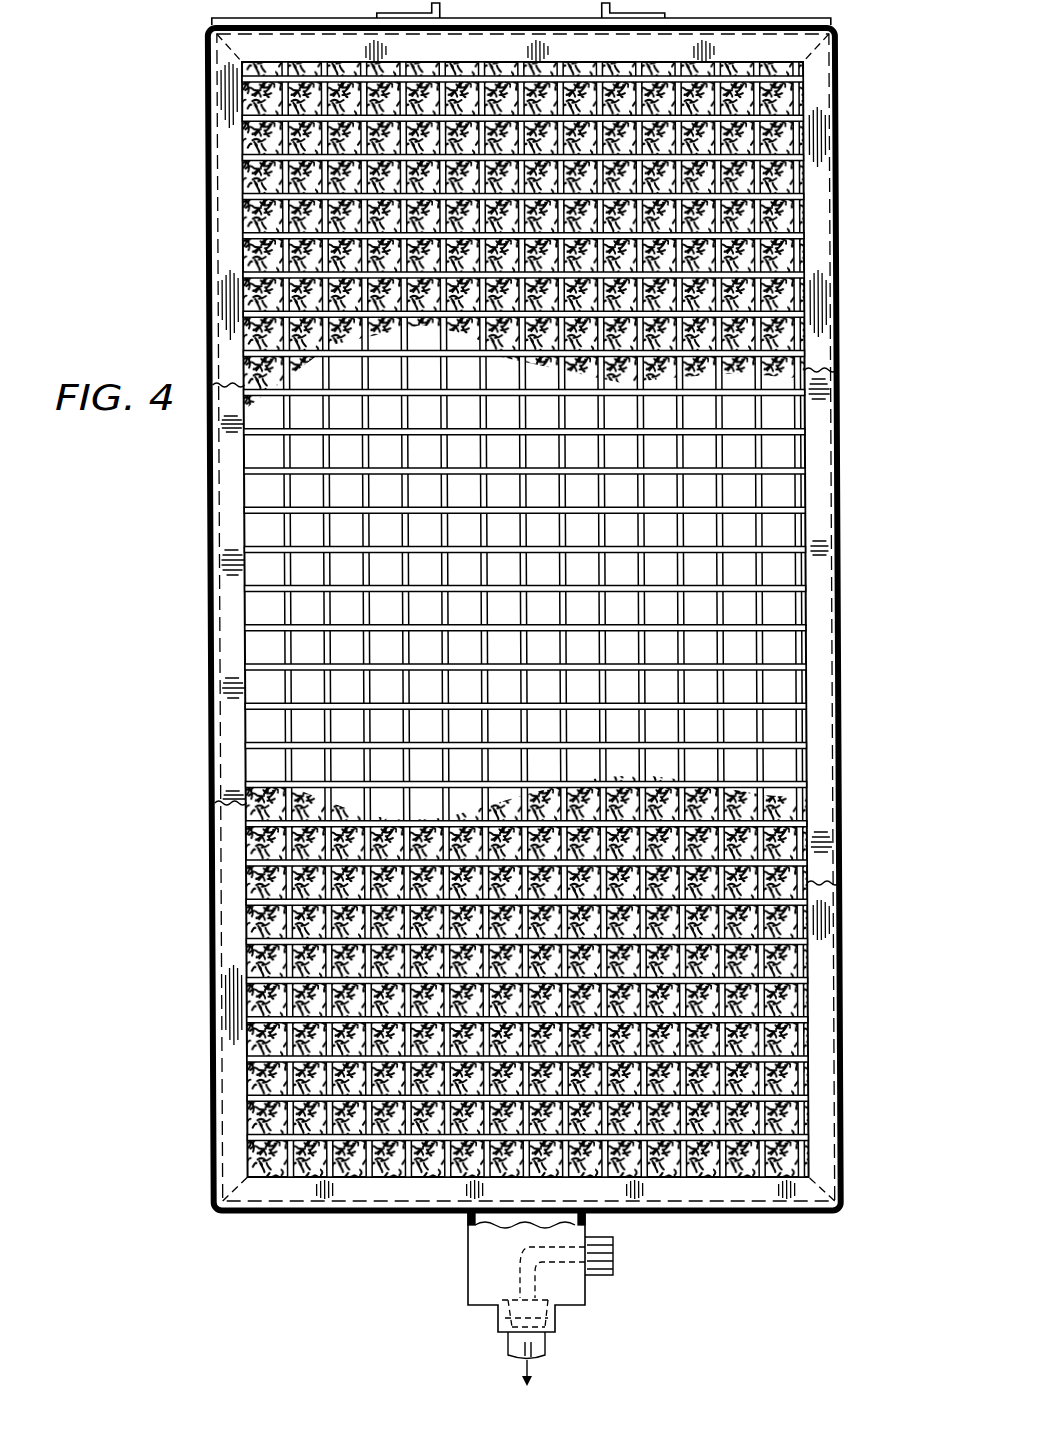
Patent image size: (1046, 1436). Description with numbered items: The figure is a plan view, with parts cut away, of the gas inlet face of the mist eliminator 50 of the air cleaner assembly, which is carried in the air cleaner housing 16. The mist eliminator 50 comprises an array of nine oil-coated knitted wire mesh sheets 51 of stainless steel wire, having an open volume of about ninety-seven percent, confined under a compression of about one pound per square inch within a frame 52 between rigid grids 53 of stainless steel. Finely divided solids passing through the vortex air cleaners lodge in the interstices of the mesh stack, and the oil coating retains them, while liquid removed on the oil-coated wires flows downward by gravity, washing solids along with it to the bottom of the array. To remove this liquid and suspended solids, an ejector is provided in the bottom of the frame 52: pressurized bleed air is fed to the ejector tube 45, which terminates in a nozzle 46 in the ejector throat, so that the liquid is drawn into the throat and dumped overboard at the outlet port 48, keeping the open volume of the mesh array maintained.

The air cleaner housing 16 is at (196, 283).
The ejector tube 45 is at (607, 1252).
The nozzle 46 is at (518, 1280).
The outlet port 48 is at (520, 1343).
The mist eliminator 50 is at (258, 925).
The knitted wire mesh sheets 51 is at (773, 250).
The frame 52 is at (820, 519).
The rigid grids 53 is at (768, 130).